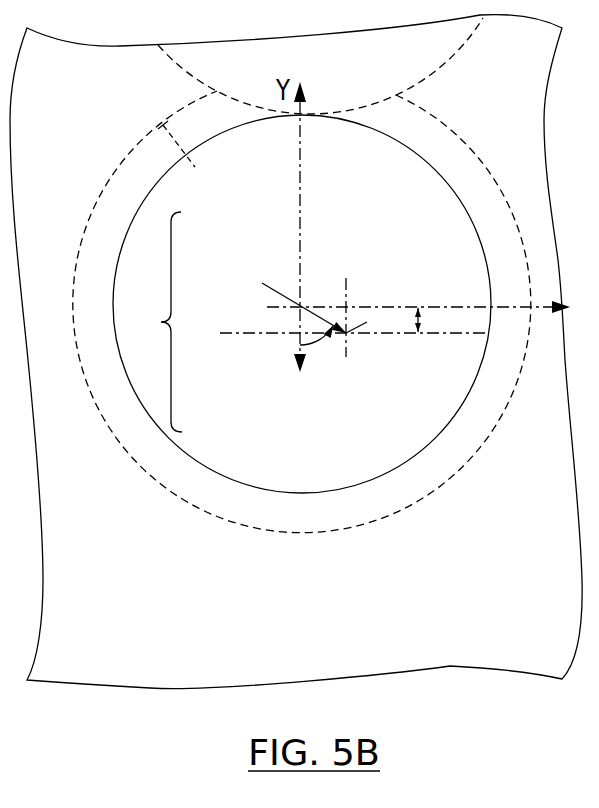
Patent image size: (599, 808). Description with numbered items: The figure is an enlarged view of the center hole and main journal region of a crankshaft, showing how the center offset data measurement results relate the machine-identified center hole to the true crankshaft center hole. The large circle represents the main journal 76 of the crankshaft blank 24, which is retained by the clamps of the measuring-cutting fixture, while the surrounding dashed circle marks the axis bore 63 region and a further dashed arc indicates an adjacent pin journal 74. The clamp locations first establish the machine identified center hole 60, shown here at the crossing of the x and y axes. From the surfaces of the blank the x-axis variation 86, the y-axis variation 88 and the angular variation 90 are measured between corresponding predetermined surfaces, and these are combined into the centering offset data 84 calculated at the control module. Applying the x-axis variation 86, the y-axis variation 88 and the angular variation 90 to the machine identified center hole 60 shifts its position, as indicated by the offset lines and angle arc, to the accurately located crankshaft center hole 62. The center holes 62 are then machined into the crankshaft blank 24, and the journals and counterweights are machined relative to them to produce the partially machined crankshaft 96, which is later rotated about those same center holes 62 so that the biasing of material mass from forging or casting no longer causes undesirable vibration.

The crankshaft blank 24 is at (296, 352).
The partially machined crankshaft 96 is at (478, 595).
The machine identified center hole 60 is at (292, 299).
The crankshaft center hole 62 is at (355, 345).
The axis bore 63 is at (337, 493).
The pin journal 74 is at (350, 110).
The main journal 76 is at (182, 163).
The centering offset data 84 is at (158, 322).
The x-axis variation 86 is at (332, 303).
The y-axis variation 88 is at (420, 320).
The angular variation 90 is at (315, 345).